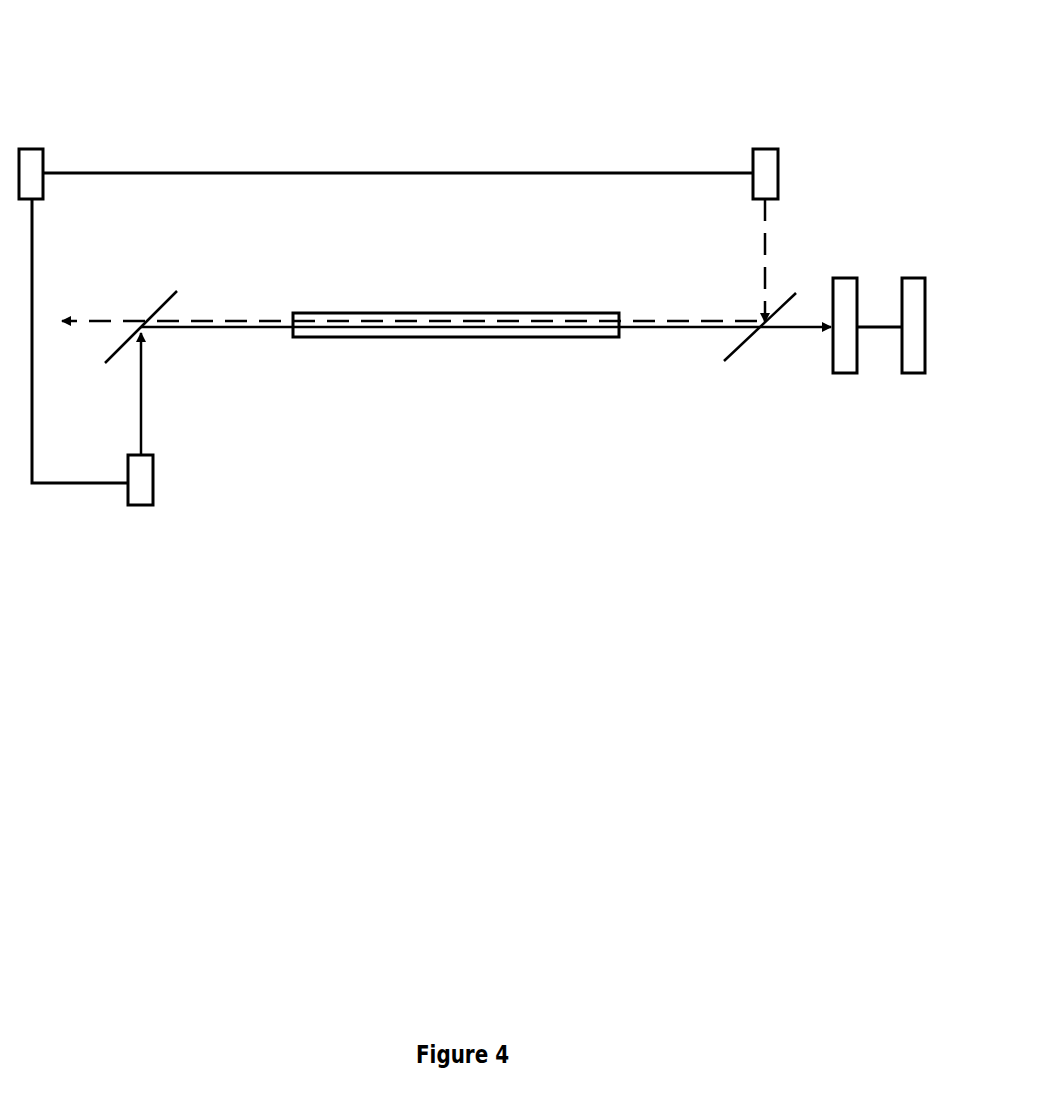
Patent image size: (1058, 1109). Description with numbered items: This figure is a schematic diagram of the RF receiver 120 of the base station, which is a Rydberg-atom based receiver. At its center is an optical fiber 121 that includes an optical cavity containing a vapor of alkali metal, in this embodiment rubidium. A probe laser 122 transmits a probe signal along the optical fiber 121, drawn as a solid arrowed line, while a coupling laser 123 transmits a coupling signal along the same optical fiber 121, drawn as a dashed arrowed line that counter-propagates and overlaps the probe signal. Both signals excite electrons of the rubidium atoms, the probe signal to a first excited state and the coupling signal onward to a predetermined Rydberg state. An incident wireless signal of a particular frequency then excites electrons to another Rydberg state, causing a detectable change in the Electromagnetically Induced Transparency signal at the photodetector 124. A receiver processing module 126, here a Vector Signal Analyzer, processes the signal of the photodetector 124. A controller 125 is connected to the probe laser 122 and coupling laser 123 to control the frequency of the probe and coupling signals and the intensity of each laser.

The RF receiver 120 is at (142, 40).
The optical fiber 121 is at (482, 313).
The probe laser 122 is at (153, 478).
The coupling laser 123 is at (778, 172).
The photodetector 124 is at (845, 278).
The controller 125 is at (31, 149).
The receiver processing module 126 is at (913, 278).